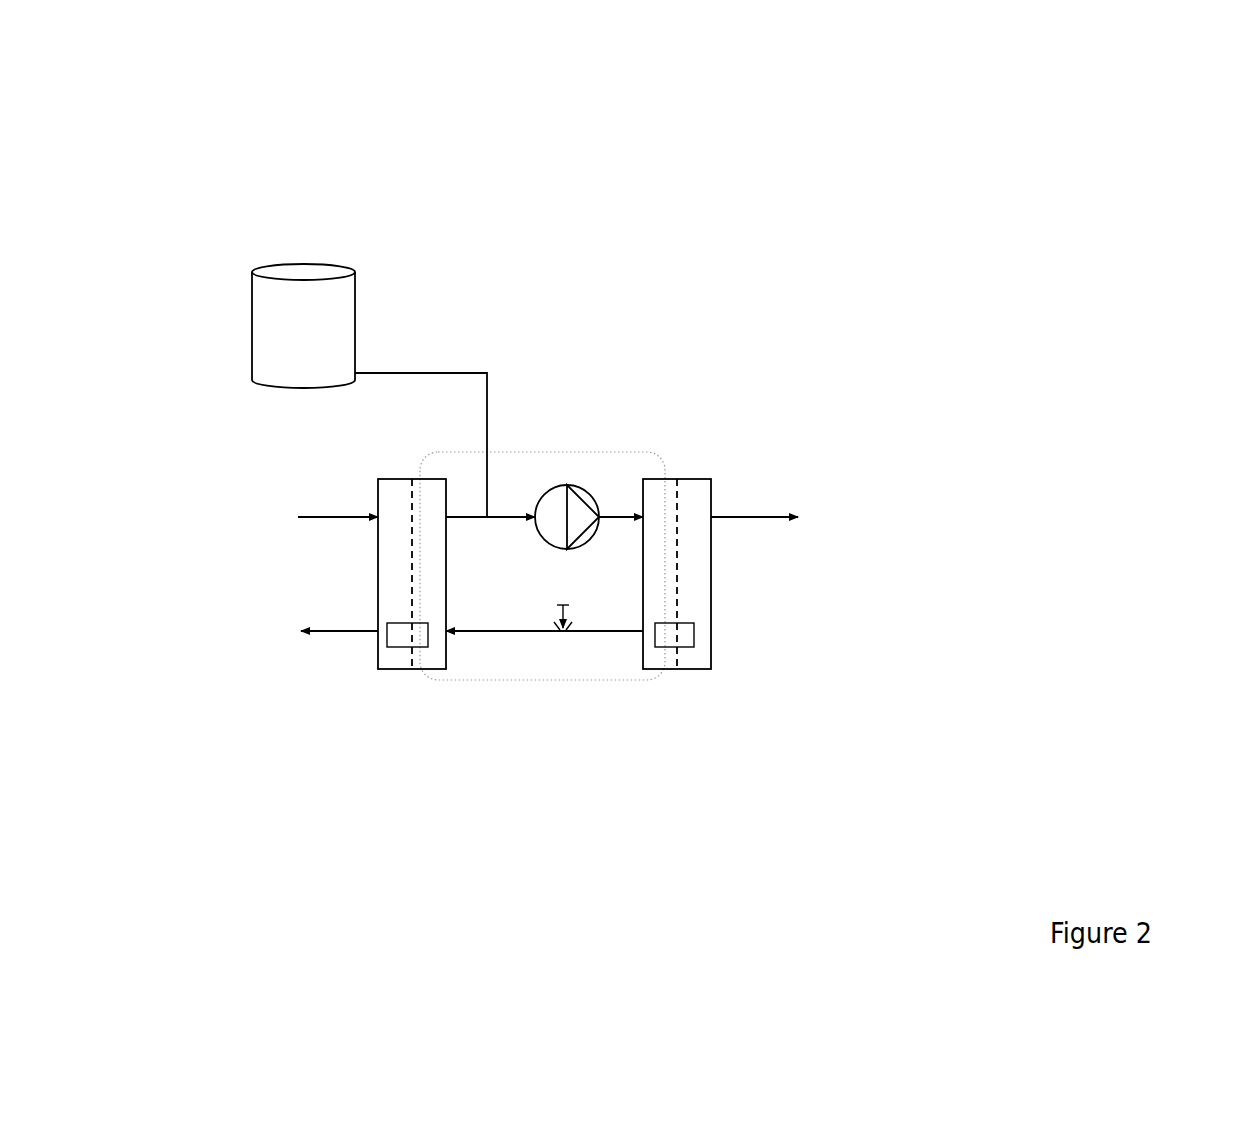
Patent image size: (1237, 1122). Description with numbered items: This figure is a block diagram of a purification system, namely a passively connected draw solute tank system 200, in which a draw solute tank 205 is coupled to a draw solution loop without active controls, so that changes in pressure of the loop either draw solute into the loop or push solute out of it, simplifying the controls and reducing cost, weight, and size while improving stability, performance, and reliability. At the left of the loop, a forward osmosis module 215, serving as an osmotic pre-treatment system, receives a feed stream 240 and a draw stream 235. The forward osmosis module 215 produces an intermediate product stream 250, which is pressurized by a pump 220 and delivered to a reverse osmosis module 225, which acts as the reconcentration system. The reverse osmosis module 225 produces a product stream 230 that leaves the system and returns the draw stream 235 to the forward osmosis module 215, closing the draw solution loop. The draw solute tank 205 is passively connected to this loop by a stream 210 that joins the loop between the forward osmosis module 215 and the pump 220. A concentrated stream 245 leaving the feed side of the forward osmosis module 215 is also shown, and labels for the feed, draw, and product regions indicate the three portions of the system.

The passively connected draw solute tank system 200 is at (1124, 86).
The draw solute tank 205 is at (313, 304).
The stream 210 is at (430, 428).
The forward osmosis module 215 is at (410, 558).
The pump 220 is at (567, 498).
The reverse osmosis module 225 is at (677, 550).
The product stream 230 is at (754, 500).
The draw stream 235 is at (544, 615).
The feed stream 240 is at (331, 499).
The concentrated feed outlet line 245 is at (339, 615).
The intermediate product stream 250 is at (544, 532).